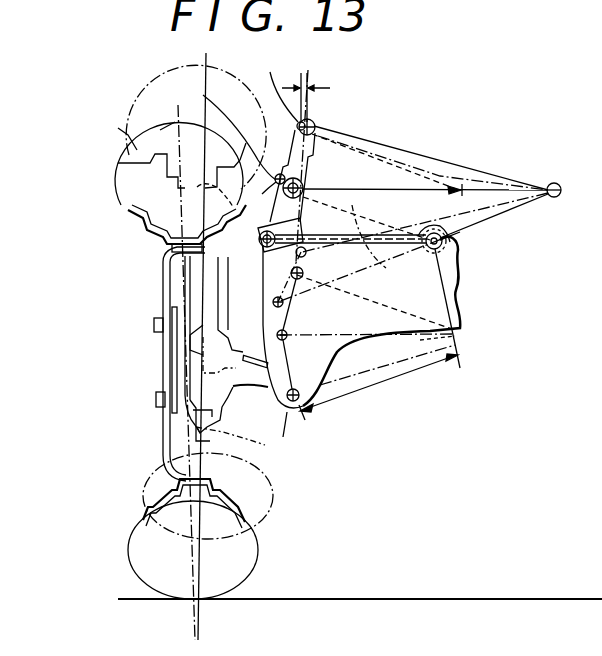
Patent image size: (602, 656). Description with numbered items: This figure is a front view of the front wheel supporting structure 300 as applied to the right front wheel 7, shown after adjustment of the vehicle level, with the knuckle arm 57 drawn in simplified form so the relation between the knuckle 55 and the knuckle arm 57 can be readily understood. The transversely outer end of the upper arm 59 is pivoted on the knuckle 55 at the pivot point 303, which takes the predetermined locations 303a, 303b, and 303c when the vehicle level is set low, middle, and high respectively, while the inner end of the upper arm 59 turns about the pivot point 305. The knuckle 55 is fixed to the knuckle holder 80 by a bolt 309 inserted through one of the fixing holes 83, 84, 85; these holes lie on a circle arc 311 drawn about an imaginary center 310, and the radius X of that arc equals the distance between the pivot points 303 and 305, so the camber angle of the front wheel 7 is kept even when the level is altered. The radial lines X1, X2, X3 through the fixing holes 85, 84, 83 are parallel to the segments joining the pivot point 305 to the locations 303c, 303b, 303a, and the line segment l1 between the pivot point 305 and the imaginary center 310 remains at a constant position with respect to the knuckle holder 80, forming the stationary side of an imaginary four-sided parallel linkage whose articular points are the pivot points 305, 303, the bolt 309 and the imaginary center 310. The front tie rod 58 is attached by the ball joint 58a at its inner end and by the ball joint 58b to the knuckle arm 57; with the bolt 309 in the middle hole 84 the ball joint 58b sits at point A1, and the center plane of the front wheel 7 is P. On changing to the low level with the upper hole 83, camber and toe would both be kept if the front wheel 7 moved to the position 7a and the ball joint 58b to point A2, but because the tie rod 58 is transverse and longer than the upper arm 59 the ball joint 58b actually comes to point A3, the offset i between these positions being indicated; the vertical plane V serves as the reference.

The front wheel 7 is at (142, 188).
The point of the front wheel 7a is at (130, 123).
The center plane P is at (152, 163).
The pivot point 303 is at (185, 237).
The predetermined location of pivot point 303a is at (209, 127).
The predetermined location of pivot point 303b is at (194, 503).
The predetermined location of pivot point 303c is at (278, 302).
The bolt 309 is at (282, 333).
The knuckle 55 is at (259, 240).
The knuckle arm 57 is at (300, 198).
The front tie rod 58 is at (415, 152).
The ball joint 58a is at (569, 166).
The ball joint 58b is at (268, 133).
The upper arm 59 is at (384, 272).
The knuckle holder 80 is at (459, 267).
The fixing hole 83 is at (300, 279).
The fixing hole 84 is at (287, 333).
The fixing hole 85 is at (300, 388).
The pivot point 305 is at (448, 234).
The imaginary center 310 is at (455, 339).
The circle arc 311 is at (291, 436).
The wheel supporting structure 300 is at (362, 405).
The point A1 is at (305, 183).
The point A2 is at (316, 125).
The point A3 is at (298, 125).
The radius of the circle arc X is at (378, 387).
The radial line X1 is at (355, 353).
The radial line X2 is at (336, 333).
The radial line X3 is at (376, 302).
The line segment l1 is at (459, 302).
The offset i is at (306, 94).
The vertical plane V is at (198, 557).